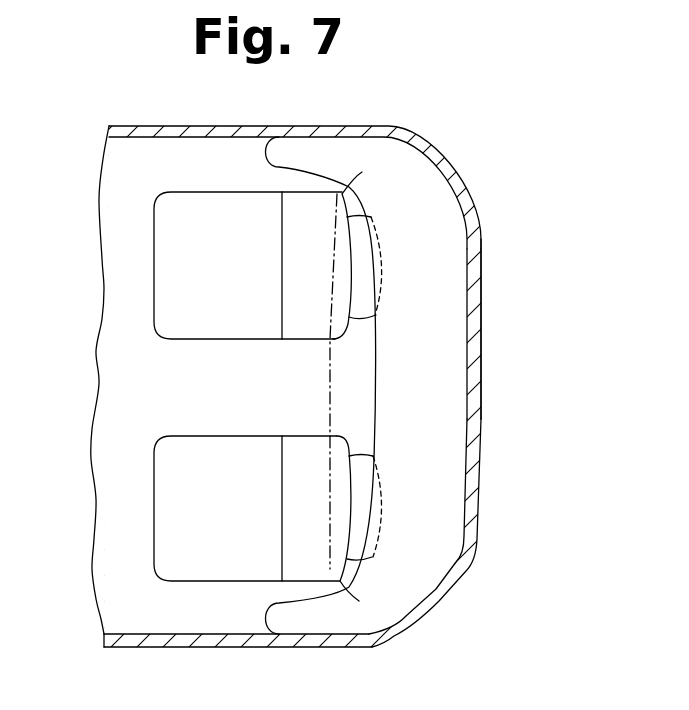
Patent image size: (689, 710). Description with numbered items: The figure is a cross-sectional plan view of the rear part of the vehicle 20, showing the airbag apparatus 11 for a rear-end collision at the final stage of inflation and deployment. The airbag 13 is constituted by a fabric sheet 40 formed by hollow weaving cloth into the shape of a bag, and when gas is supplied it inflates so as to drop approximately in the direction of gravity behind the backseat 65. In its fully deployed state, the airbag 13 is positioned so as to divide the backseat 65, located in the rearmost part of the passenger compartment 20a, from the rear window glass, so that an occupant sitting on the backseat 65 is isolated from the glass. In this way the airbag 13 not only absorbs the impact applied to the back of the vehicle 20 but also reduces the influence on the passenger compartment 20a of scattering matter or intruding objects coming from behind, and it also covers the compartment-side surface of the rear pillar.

The vehicle 20 is at (466, 163).
The passenger compartment 20a is at (176, 625).
The airbag apparatus 11 is at (493, 241).
The airbag 13 is at (462, 322).
The fabric sheet 40 is at (268, 155).
The backseat 65 is at (173, 342).